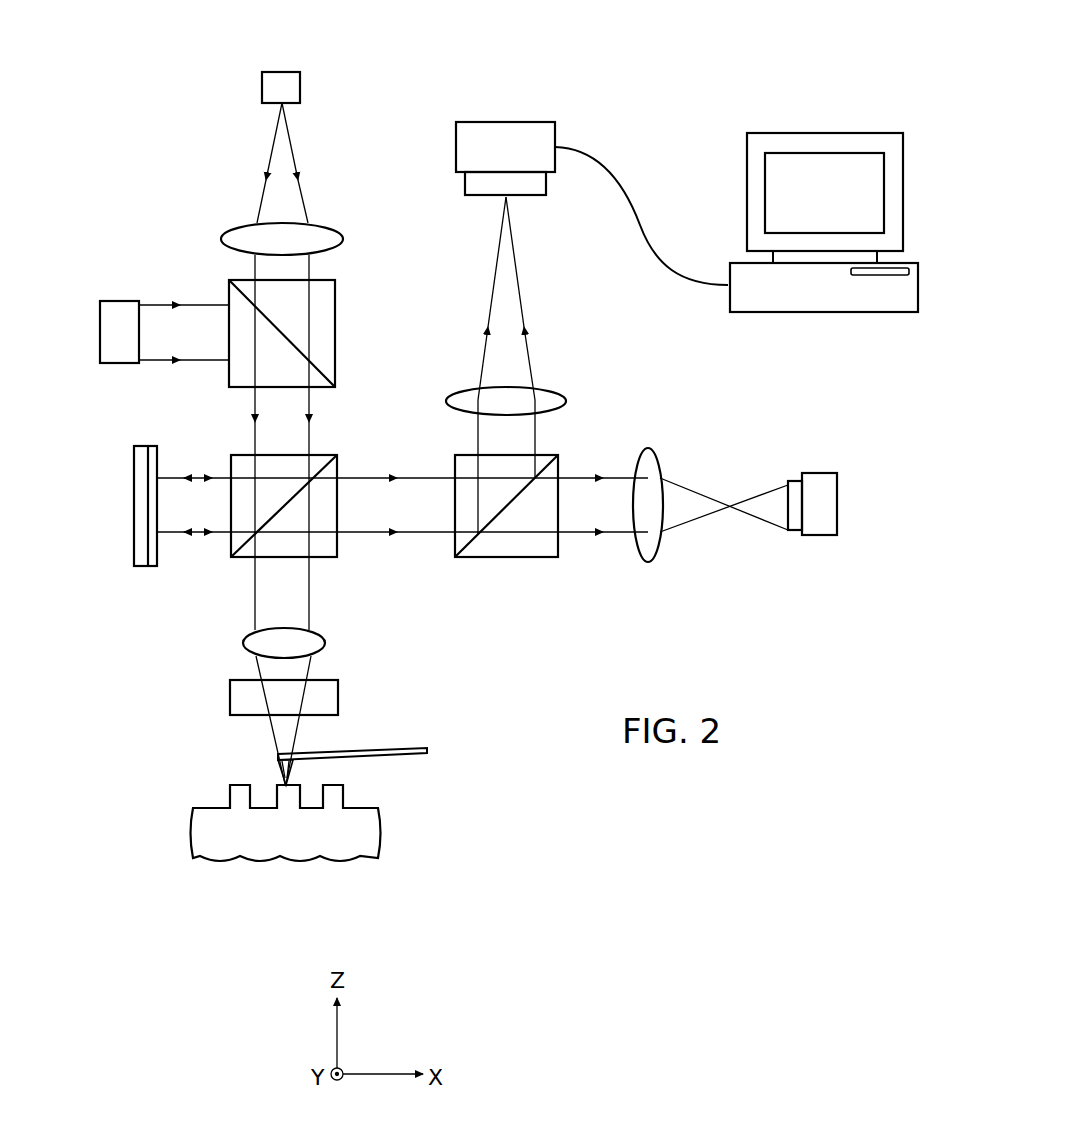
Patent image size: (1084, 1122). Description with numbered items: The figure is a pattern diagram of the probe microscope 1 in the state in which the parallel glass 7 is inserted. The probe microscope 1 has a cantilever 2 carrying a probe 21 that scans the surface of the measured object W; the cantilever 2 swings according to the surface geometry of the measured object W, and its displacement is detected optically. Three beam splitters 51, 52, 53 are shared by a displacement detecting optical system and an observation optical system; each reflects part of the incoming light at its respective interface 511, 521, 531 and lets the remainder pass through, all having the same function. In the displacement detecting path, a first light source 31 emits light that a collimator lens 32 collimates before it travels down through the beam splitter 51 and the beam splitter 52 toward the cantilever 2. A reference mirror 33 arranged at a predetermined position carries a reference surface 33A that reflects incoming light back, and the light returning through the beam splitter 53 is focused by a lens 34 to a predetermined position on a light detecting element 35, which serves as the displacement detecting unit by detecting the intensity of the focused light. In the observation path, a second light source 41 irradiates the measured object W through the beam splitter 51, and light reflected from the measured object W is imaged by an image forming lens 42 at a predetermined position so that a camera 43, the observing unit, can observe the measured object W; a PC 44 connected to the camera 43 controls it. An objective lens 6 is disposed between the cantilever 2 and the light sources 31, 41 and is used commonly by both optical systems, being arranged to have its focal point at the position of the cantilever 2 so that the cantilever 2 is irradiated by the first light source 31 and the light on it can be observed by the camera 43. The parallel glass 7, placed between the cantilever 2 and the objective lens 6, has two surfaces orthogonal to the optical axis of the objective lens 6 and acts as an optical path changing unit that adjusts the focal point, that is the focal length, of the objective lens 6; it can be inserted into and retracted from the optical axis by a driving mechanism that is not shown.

The probe microscope 1 is at (677, 82).
The cantilever 2 is at (366, 732).
The probe 21 is at (283, 773).
The objective lens 6 is at (325, 642).
The parallel glass 7 is at (230, 698).
The first light source 31 is at (283, 72).
The collimator lens 32 is at (327, 230).
The reference mirror 33 is at (138, 568).
The reference surface 33A is at (156, 445).
The lens 34 is at (648, 565).
The light detecting element 35 is at (812, 537).
The second light source 41 is at (120, 301).
The image forming lens 42 is at (567, 401).
The camera 43 is at (508, 122).
The PC 44 is at (822, 313).
The beam splitter 51 is at (335, 290).
The interface 511 is at (320, 362).
The beam splitter 52 is at (245, 555).
The interface 521 is at (233, 542).
The beam splitter 53 is at (540, 555).
The interface 531 is at (472, 541).
The measured object W is at (378, 830).